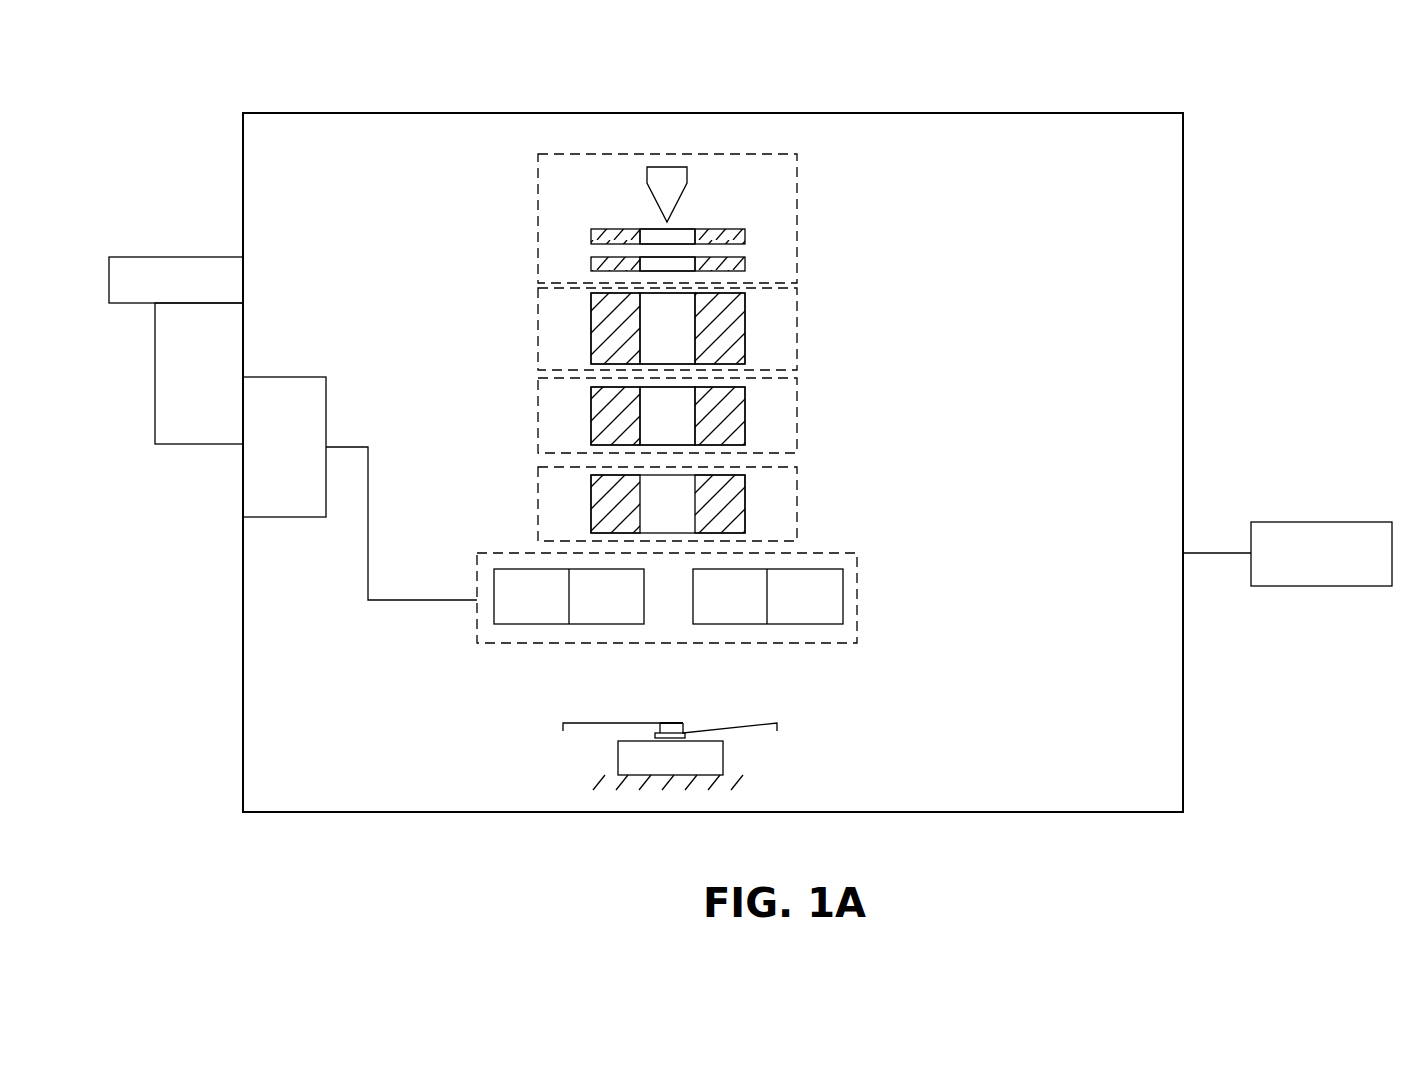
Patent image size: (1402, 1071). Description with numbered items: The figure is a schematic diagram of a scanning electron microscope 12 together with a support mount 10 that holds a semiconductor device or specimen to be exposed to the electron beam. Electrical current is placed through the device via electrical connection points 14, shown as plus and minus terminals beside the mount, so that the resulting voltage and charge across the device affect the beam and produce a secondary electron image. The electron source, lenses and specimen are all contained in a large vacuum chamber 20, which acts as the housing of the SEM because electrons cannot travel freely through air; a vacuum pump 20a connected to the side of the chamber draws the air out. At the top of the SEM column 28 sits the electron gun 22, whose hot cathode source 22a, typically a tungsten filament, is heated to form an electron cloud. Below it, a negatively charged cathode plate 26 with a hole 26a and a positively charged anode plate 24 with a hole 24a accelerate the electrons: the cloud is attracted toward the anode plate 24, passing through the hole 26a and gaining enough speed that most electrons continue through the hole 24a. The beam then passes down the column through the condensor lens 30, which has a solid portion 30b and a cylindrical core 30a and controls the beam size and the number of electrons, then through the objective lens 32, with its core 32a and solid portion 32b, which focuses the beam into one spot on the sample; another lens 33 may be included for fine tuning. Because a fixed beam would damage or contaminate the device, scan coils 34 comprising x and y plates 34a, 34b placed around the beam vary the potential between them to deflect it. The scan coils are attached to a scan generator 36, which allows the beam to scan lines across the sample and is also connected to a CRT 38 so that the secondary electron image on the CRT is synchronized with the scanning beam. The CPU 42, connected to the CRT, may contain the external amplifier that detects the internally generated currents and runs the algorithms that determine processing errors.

The support mount 10 is at (723, 756).
The scanning electron microscope 12 is at (1280, 320).
The electrical connection points 14 is at (679, 723).
The vacuum chamber 20 is at (1185, 128).
The vacuum pump 20a is at (1322, 522).
The electron gun 22 is at (797, 233).
The hot cathode source 22a is at (688, 174).
The anode plate 24 is at (591, 262).
The hole in anode plate 24a is at (675, 265).
The cathode plate 26 is at (591, 237).
The hole in cathode plate 26a is at (665, 237).
The SEM column 28 is at (850, 367).
The condensor lens 30 is at (797, 320).
The cylindrical core 30a is at (652, 324).
The solid portion 30b is at (591, 340).
The objective lens 32 is at (797, 408).
The core 32a is at (652, 407).
The solid portion 32b is at (591, 423).
The lens 33 is at (797, 497).
The scan coils 34 is at (857, 598).
The x plates 34a is at (533, 624).
The y plates 34b is at (609, 624).
The scan generator 36 is at (283, 377).
The CRT 38 is at (155, 373).
The CPU 42 is at (178, 257).